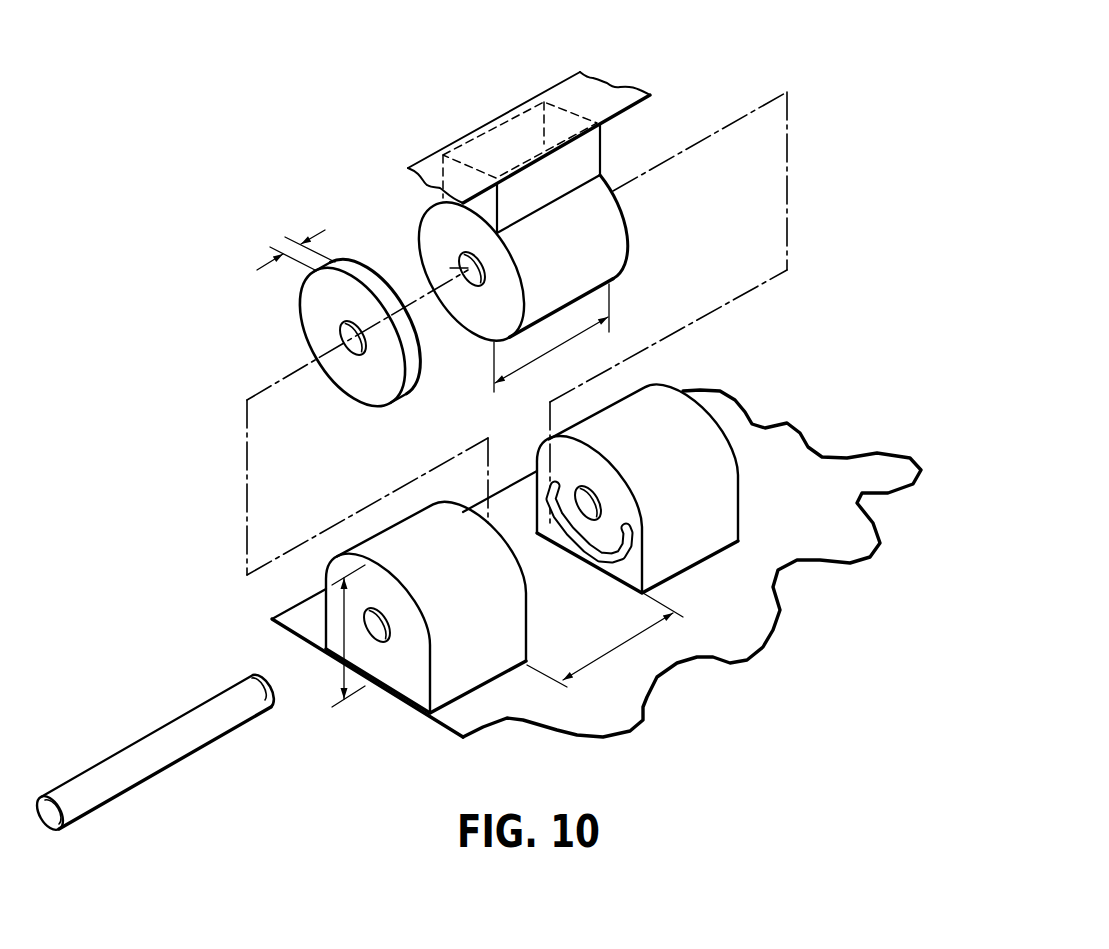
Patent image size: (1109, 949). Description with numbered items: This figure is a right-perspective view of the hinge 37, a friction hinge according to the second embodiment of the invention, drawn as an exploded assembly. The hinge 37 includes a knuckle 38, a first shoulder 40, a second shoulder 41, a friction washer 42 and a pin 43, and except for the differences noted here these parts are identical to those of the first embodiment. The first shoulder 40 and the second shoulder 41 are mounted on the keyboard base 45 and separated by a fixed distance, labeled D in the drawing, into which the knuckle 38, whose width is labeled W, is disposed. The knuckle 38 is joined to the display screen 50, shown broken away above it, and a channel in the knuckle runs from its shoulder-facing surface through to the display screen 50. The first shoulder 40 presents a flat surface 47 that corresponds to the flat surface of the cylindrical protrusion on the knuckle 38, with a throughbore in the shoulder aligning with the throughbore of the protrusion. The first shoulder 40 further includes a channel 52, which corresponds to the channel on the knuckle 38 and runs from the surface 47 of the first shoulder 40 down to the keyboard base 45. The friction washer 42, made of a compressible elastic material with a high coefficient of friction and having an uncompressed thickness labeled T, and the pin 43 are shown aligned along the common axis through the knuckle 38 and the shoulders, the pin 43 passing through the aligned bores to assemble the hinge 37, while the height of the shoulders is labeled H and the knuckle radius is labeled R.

The hinge 37 is at (815, 100).
The knuckle 38 is at (602, 242).
The first shoulder 40 is at (713, 462).
The second shoulder 41 is at (465, 667).
The friction washer 42 is at (388, 290).
The pin 43 is at (173, 732).
The keyboard base 45 is at (812, 480).
The surface 47 is at (604, 488).
The display screen 50 is at (596, 102).
The channel 52 is at (597, 550).